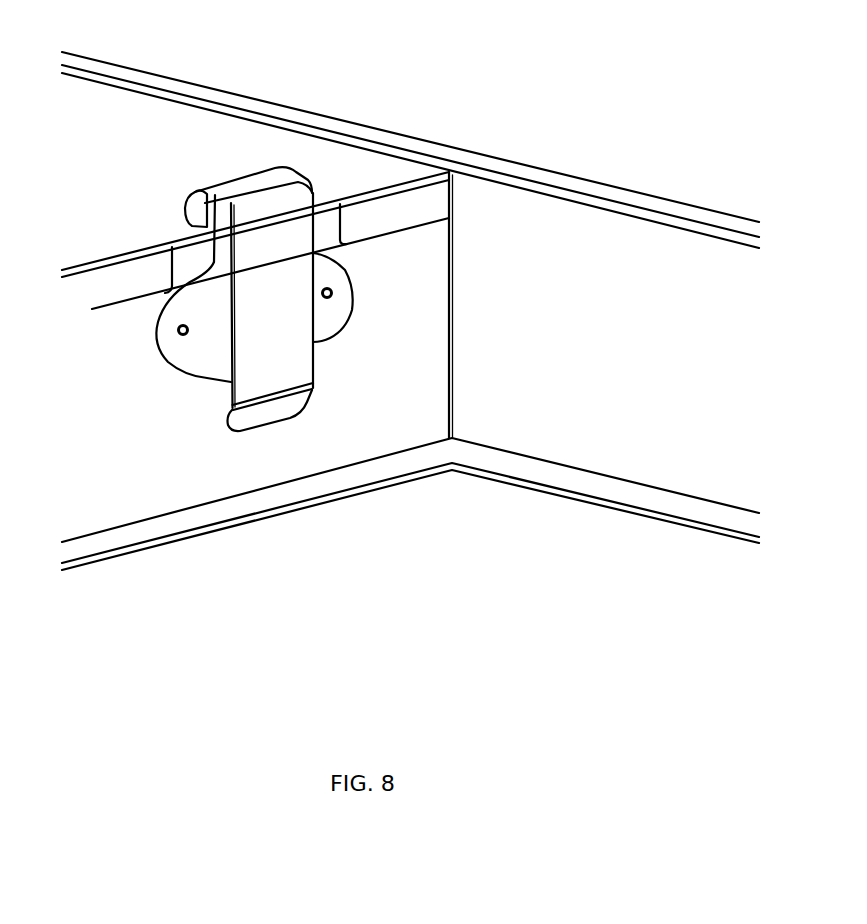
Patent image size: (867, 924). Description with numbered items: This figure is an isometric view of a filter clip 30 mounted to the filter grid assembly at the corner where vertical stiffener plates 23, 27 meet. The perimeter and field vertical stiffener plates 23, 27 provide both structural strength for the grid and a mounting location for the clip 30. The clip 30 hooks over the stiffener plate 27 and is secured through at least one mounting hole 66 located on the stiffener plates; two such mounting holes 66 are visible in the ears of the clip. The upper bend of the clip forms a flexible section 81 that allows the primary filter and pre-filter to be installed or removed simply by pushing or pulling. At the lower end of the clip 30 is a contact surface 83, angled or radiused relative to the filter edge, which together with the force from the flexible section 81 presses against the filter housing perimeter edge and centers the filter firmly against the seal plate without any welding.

The perimeter vertical stiffener plate 23 is at (589, 333).
The vertical stiffener plate 27 is at (370, 387).
The clip 30 is at (290, 276).
The flexible section 81 is at (288, 182).
The mounting hole 66 is at (177, 330).
The contact surface 83 is at (250, 248).